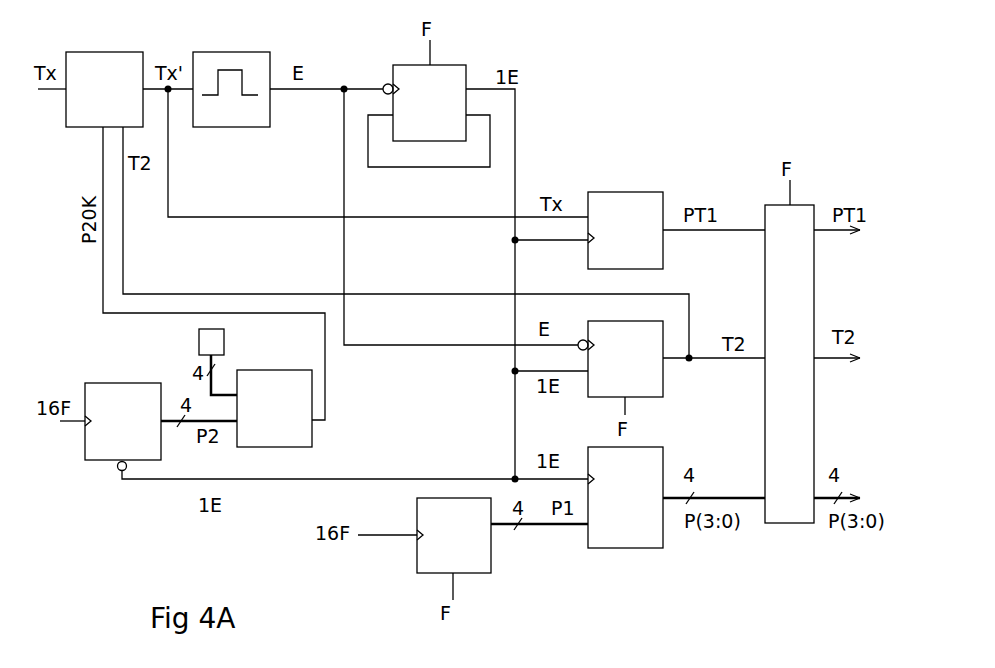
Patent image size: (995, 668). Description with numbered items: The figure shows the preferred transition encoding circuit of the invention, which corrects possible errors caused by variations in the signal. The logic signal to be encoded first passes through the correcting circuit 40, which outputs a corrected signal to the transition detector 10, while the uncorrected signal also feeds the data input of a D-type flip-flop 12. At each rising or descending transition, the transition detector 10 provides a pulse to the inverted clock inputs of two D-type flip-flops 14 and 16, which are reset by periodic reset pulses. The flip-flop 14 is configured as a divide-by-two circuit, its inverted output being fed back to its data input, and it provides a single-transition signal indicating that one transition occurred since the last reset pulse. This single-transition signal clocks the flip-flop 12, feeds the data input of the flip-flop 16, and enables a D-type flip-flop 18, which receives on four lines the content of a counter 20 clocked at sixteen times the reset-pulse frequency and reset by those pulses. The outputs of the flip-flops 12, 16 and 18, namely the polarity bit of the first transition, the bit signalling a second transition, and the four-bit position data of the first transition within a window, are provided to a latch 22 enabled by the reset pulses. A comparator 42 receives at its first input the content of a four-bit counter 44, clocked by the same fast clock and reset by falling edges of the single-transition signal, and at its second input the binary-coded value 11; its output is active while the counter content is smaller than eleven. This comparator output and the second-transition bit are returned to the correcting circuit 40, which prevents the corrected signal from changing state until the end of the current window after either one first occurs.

The correcting circuit 40 is at (112, 65).
The transition detector 10 is at (232, 128).
The D-type flip-flop 14 is at (458, 75).
The D-type flip-flop 12 is at (628, 196).
The D-type flip-flop 16 is at (652, 380).
The D-type flip-flop 18 is at (622, 547).
The counter 20 is at (438, 499).
The latch 22 is at (790, 524).
The comparator 42 is at (281, 378).
The 4-bit counter 44 is at (122, 390).
The value 11 is at (211, 342).